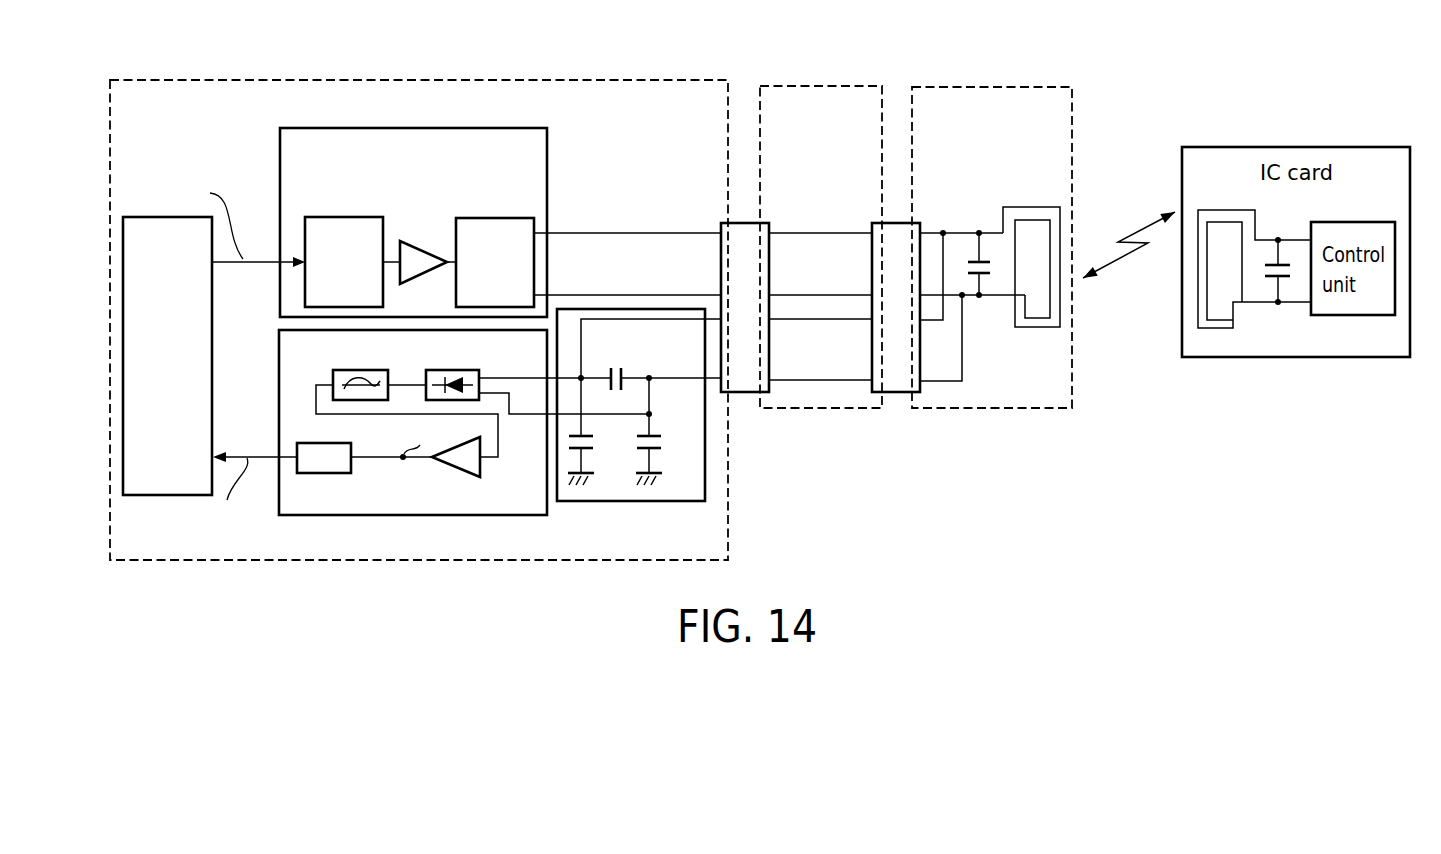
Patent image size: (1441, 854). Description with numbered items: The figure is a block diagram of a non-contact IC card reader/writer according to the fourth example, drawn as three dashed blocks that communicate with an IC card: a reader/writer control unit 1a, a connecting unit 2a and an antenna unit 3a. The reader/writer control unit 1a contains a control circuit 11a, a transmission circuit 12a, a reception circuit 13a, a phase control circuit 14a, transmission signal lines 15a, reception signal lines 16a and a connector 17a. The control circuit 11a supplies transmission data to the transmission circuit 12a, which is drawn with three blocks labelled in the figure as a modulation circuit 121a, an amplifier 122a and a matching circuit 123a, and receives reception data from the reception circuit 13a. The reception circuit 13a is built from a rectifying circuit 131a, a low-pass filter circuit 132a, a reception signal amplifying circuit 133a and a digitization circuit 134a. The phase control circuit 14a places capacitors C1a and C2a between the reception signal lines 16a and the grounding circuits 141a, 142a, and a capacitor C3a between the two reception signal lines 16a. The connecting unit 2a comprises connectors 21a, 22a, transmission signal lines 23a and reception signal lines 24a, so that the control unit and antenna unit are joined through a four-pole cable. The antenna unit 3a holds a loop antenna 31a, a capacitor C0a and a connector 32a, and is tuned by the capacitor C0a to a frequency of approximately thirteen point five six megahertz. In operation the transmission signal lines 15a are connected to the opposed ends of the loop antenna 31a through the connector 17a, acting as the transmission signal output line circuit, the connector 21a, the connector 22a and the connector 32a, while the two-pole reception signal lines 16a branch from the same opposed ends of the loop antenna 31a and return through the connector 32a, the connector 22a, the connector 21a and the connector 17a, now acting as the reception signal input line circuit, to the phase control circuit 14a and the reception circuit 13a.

The reader/writer control unit 1a is at (444, 80).
The connecting unit 2a is at (824, 86).
The antenna unit 3a is at (1032, 87).
The control circuit 11a is at (213, 327).
The transmission circuit 12a is at (547, 131).
The reception circuit 13a is at (411, 516).
The phase control circuit 14a is at (705, 498).
The transmission signal lines 15a is at (605, 292).
The reception signal lines 16a is at (655, 377).
The connector 17a is at (763, 343).
The connector 21a is at (740, 392).
The connector 22a is at (916, 337).
The transmission signal lines 23a is at (848, 296).
The reception signal lines 24a is at (830, 322).
The loop antenna 31a is at (1035, 330).
The connector 32a is at (893, 392).
The capacitor C0a is at (967, 252).
The modulation circuit 121a is at (347, 217).
The amplifier 122a is at (427, 245).
The matching circuit 123a is at (510, 203).
The rectifying circuit 131a is at (436, 370).
The low-pass filter circuit 132a is at (346, 370).
The reception signal amplifying circuit 133a is at (480, 468).
The digitization circuit 134a is at (305, 443).
The grounding circuit 141a is at (591, 464).
The grounding circuit 142a is at (662, 464).
The capacitor C1a is at (600, 437).
The capacitor C2a is at (652, 438).
The capacitor C3a is at (615, 366).